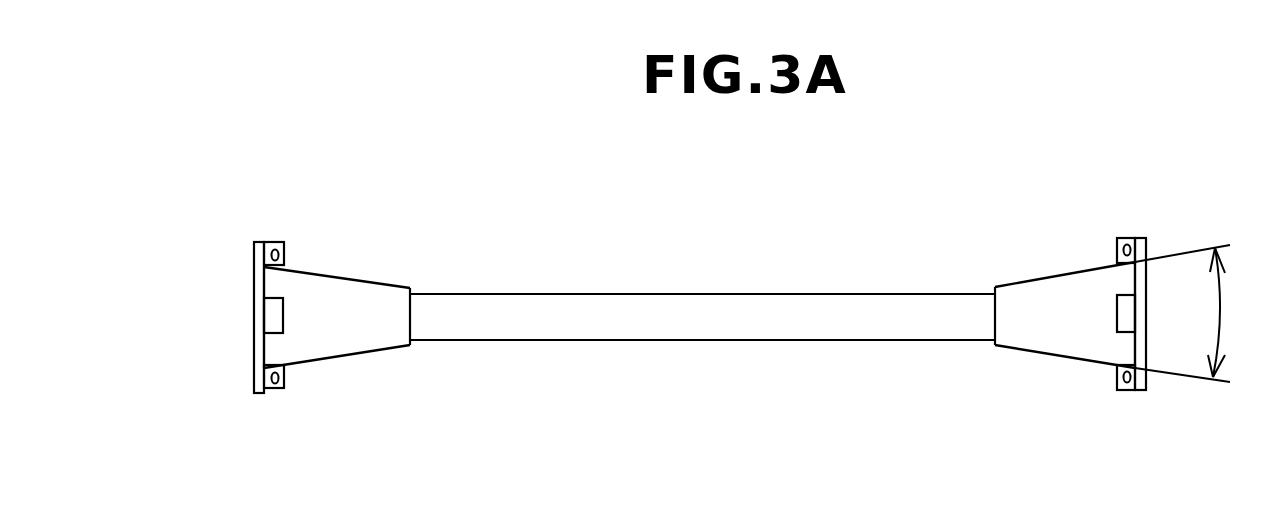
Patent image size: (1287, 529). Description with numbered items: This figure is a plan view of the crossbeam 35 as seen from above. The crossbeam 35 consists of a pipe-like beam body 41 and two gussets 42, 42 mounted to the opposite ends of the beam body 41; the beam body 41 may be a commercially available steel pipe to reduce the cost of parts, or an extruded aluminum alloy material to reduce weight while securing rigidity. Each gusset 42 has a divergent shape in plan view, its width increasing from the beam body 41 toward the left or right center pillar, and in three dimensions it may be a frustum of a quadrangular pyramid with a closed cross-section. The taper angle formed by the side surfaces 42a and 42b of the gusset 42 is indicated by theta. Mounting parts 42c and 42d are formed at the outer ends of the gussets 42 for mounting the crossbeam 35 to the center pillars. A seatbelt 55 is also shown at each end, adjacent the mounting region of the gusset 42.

The crossbeam 35 is at (437, 178).
The beam body 41 is at (698, 294).
The gusset 42 is at (333, 273).
The side surface of gusset 42a is at (375, 283).
The side surface of gusset 42b is at (365, 353).
The mounting part 42c is at (273, 242).
The mounting part 42d is at (273, 390).
The seatbelt 55 is at (257, 302).